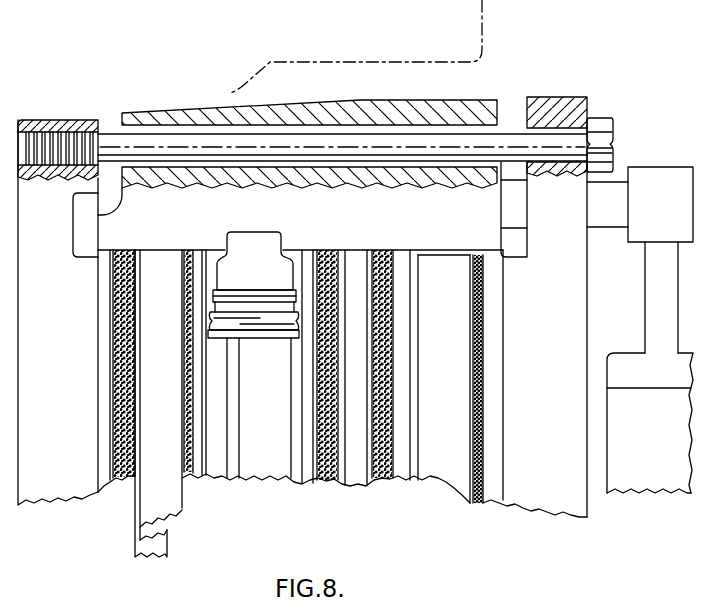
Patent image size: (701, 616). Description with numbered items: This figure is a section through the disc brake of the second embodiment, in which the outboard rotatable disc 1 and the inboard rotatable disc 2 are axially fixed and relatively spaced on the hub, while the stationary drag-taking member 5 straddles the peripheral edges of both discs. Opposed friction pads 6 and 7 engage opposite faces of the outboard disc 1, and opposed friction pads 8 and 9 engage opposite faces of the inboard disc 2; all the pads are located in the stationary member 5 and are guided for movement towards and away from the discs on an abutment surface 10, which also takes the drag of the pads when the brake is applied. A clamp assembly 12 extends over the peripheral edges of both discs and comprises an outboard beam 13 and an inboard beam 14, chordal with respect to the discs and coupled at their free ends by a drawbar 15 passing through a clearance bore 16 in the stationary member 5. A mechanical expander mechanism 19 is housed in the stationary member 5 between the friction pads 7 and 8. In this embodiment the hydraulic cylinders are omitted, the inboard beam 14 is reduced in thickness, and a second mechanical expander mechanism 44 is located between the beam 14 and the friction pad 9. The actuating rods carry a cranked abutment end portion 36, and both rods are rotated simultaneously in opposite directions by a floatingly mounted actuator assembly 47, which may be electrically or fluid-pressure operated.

The outboard rotatable disc 1 is at (152, 545).
The inboard rotatable disc 2 is at (357, 457).
The stationary drag-taking member 5 is at (340, 112).
The friction pad 6 is at (127, 450).
The friction pad 7 is at (182, 470).
The friction pad 8 is at (327, 458).
The friction pad 9 is at (387, 453).
The abutment surface 10 is at (247, 340).
The clamp assembly 12 is at (555, 322).
The outboard beam 13 is at (50, 477).
The inboard beam 14 is at (553, 288).
The drawbar 15 is at (457, 147).
The clearance bore 16 is at (403, 125).
The mechanical expander mechanism 19 is at (254, 323).
The cranked abutment end portion 36 is at (653, 197).
The second mechanical expander mechanism 44 is at (452, 447).
The actuator assembly 47 is at (677, 455).